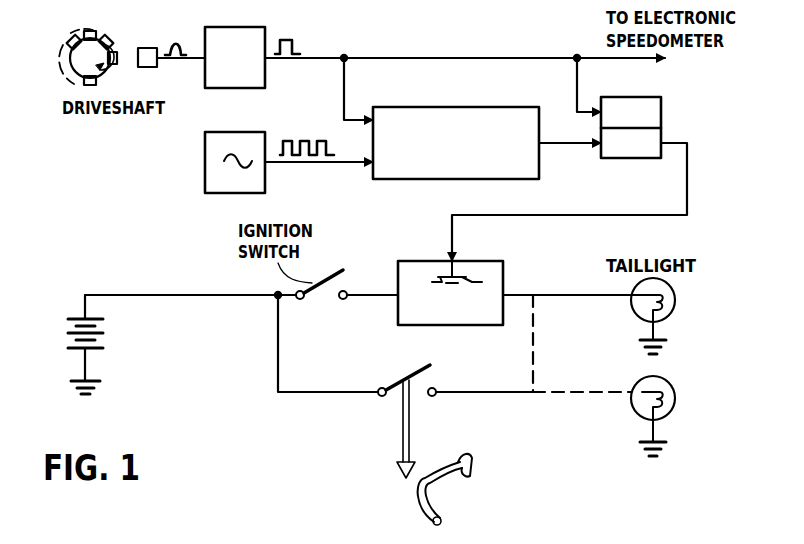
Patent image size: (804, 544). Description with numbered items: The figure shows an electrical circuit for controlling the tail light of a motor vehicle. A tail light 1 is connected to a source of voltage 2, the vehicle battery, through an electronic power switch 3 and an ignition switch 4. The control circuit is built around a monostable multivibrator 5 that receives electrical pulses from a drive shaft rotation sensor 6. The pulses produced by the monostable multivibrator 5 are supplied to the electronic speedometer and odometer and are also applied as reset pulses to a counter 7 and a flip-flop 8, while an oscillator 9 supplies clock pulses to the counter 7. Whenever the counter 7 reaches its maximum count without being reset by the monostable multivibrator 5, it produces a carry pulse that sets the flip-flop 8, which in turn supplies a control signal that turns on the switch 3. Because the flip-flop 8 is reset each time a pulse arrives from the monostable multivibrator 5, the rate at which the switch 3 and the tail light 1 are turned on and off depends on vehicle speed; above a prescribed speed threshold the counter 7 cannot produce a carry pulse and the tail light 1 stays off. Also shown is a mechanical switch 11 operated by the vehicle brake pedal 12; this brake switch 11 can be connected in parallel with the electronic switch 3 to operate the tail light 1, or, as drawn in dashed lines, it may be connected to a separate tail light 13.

The tail light 1 is at (668, 312).
The source of voltage 2 is at (104, 330).
The electronic power switch 3 is at (497, 271).
The ignition switch 4 is at (345, 281).
The monostable multivibrator 5 is at (245, 30).
The drive shaft rotation sensor 6 is at (147, 48).
The counter 7 is at (518, 109).
The flip-flop 8 is at (653, 111).
The oscillator 9 is at (205, 167).
The mechanical switch 11 is at (400, 378).
The brake pedal 12 is at (471, 456).
The separate tail light 13 is at (668, 410).